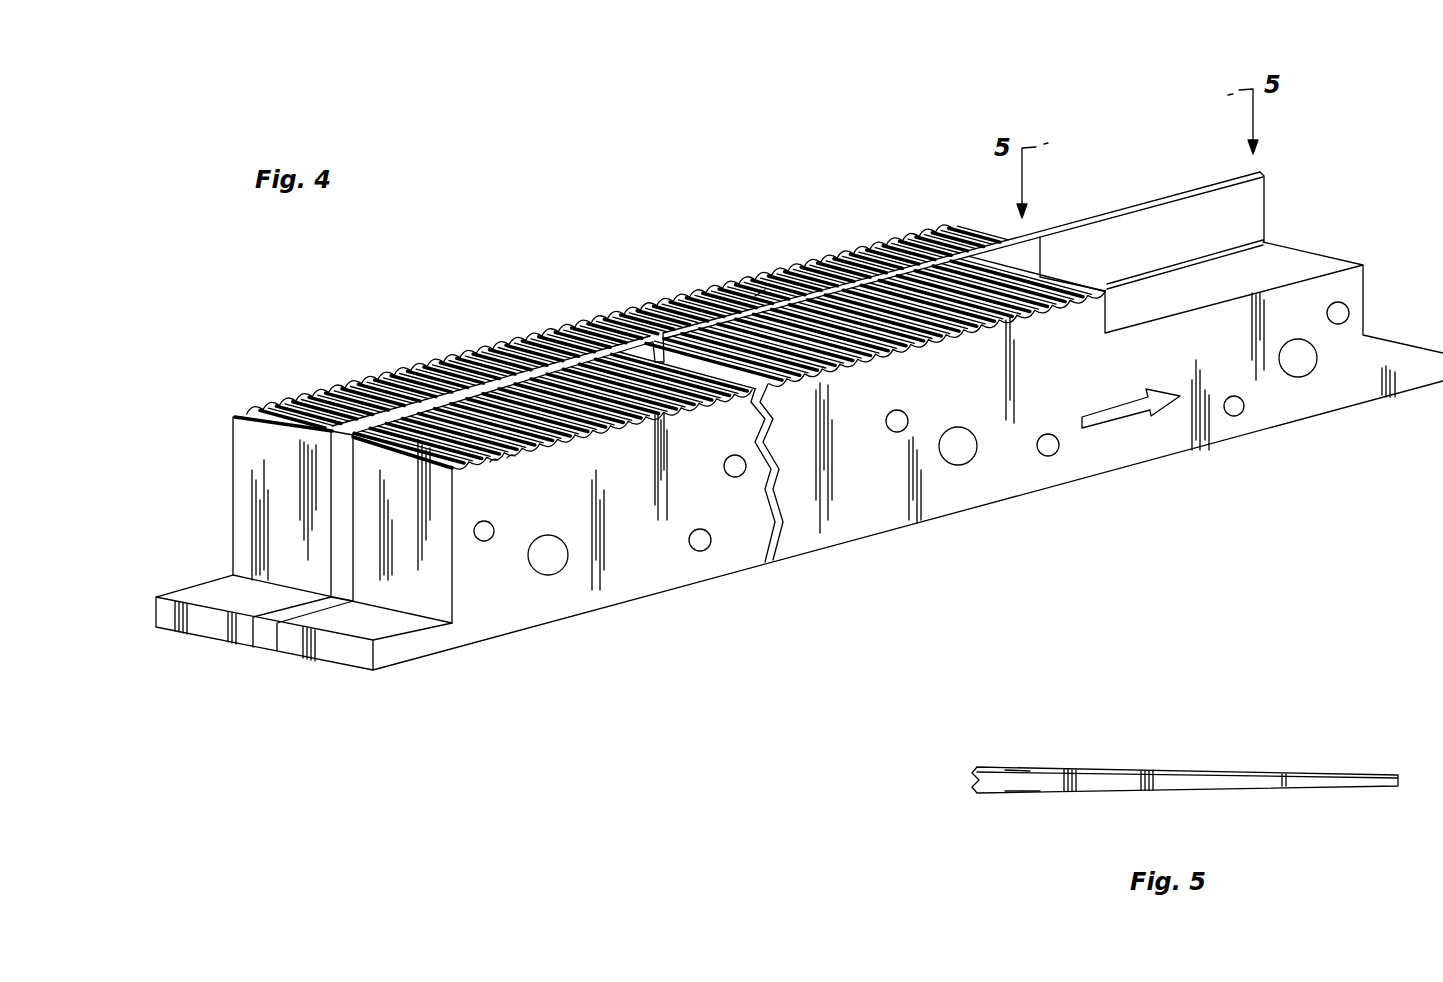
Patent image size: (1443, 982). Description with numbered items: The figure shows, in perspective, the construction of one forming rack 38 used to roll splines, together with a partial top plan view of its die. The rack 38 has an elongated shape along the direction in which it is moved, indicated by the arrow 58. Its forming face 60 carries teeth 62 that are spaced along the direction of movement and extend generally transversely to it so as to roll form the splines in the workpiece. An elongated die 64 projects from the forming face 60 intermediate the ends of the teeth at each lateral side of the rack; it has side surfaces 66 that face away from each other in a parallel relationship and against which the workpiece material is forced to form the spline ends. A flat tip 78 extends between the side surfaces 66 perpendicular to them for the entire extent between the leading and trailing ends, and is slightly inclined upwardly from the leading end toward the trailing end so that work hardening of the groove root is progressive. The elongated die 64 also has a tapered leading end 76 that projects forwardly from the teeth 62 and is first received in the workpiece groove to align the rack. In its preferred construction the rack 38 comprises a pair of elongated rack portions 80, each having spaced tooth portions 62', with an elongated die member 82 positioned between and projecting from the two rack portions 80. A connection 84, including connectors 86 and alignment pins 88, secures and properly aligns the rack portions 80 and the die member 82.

In FIG. 4, the rack 38 is at (806, 237).
In FIG. 4, the arrow 58 is at (1130, 413).
In FIG. 4, the forming face 60 is at (562, 330).
In FIG. 4, the teeth 62 is at (628, 326).
In FIG. 4, the tooth portions 62' is at (403, 411).
In FIG. 4, the elongated die 64 is at (693, 297).
In FIG. 5, the elongated die 64 is at (1023, 797).
In FIG. 4, the side surfaces 66 is at (912, 285).
In FIG. 4, the tapered leading end 76 is at (1157, 197).
In FIG. 5, the tapered leading end 76 is at (1228, 772).
In FIG. 4, the flat tip 78 is at (760, 302).
In FIG. 5, the flat tip 78 is at (1018, 773).
In FIG. 4, the elongated rack portions 80 is at (258, 460).
In FIG. 4, the elongated die member 82 is at (340, 555).
In FIG. 4, the connection 84 is at (552, 590).
In FIG. 4, the connectors 86 is at (562, 560).
In FIG. 4, the alignment pins 88 is at (897, 433).